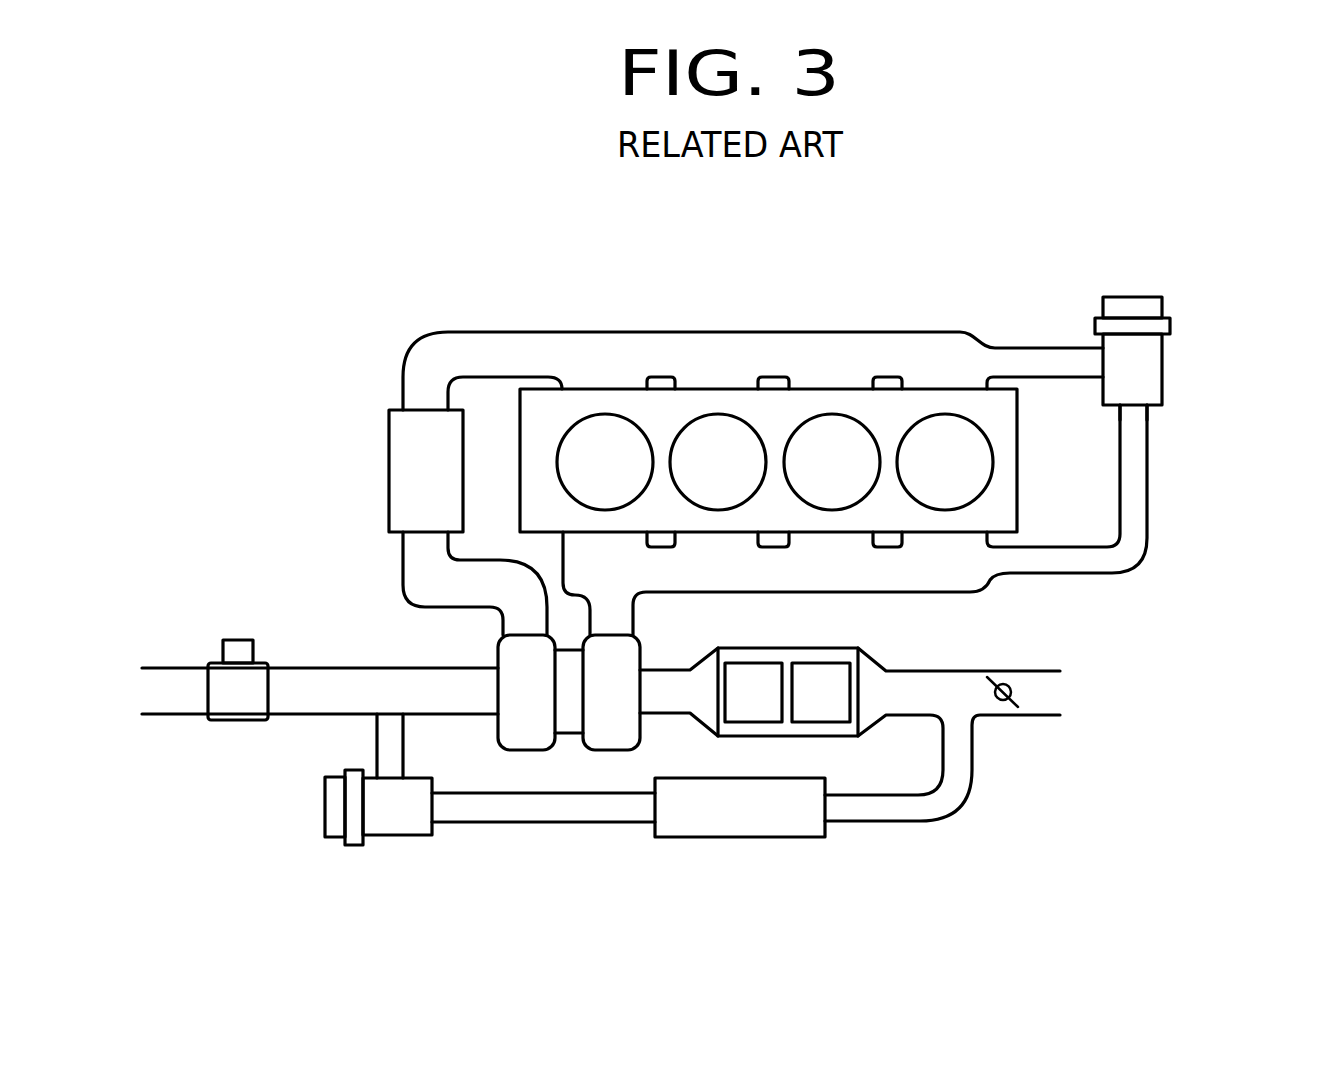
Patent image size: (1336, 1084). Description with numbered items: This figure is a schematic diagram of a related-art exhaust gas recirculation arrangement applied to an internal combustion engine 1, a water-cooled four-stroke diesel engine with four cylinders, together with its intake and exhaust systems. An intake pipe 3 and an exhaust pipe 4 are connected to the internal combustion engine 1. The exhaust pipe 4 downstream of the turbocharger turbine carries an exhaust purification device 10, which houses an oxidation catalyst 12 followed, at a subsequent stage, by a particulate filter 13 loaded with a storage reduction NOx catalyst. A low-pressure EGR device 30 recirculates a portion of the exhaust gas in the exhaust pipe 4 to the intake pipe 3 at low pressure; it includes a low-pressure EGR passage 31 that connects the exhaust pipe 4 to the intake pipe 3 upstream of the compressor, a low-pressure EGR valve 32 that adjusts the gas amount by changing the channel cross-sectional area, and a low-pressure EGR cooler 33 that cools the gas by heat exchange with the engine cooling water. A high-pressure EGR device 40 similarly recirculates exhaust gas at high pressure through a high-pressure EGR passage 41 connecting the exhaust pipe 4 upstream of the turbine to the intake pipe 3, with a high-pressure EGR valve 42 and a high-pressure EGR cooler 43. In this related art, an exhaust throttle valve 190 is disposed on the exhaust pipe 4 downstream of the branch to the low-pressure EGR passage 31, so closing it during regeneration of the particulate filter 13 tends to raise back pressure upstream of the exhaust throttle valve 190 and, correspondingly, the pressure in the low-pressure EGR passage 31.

The internal combustion engine 1 is at (443, 320).
The intake pipe 3 is at (562, 332).
The exhaust pipe 4 is at (663, 593).
The exhaust purification device 10 is at (803, 721).
The oxidation catalyst 12 is at (750, 722).
The particulate filter 13 is at (862, 758).
The low-pressure EGR device 30 is at (570, 826).
The low-pressure EGR passage 31 is at (870, 823).
The low-pressure EGR valve 32 is at (383, 838).
The low-pressure EGR cooler 33 is at (735, 838).
The high-pressure EGR device 40 is at (1127, 419).
The high-pressure EGR passage 41 is at (1035, 577).
The high-pressure EGR valve 42 is at (1165, 352).
The high-pressure EGR cooler 43 is at (1148, 437).
The exhaust throttle valve 190 is at (1008, 712).